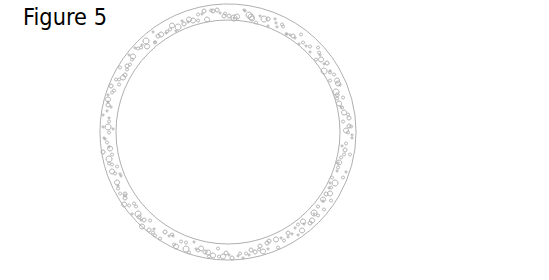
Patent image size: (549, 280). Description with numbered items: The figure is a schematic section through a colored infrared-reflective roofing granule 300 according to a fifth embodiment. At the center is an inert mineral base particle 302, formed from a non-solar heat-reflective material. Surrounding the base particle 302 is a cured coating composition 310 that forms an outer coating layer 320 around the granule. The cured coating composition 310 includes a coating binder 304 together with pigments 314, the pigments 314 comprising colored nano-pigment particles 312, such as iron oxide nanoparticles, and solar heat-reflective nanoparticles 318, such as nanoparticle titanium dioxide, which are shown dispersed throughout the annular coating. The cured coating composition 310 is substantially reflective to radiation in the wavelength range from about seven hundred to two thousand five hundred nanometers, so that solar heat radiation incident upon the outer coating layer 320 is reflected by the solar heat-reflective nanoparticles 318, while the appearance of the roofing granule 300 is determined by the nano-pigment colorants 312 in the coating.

The colored infrared-reflective roofing granule 300 is at (90, 85).
The inert mineral base particle 302 is at (237, 130).
The coating binder 304 is at (300, 32).
The cured coating composition 310 is at (99, 149).
The colored nano-pigment particles 312 is at (177, 245).
The pigments 314 is at (315, 225).
The solar heat-reflective nanoparticles 318 is at (122, 190).
The outer coating layer 320 is at (338, 173).